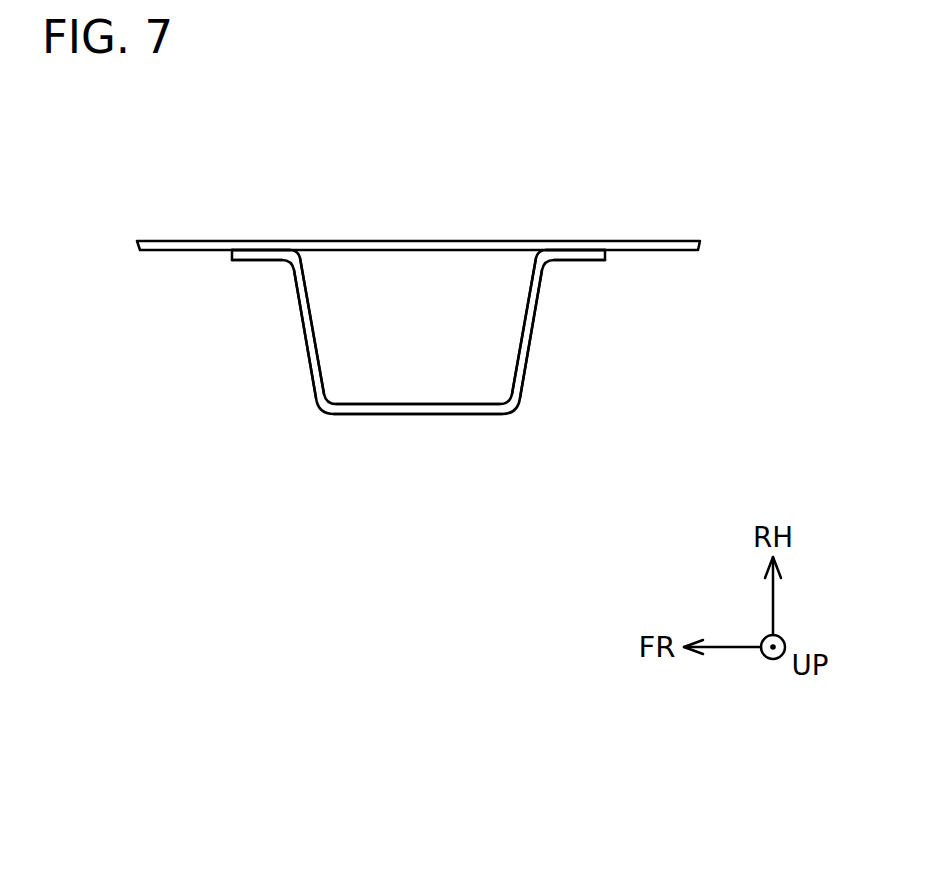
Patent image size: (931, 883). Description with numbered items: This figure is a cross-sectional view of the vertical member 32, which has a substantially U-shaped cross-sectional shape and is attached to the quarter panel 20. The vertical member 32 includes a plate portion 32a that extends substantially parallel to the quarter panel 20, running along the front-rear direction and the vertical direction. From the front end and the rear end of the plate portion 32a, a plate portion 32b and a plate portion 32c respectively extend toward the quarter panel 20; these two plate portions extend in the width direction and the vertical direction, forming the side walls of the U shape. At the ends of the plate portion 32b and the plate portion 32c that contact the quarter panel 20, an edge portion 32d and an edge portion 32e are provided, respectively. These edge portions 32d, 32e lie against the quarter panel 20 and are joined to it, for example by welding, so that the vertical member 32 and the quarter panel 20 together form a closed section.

The quarter panel 20 is at (456, 245).
The vertical member 32 is at (343, 428).
The plate portion 32a is at (438, 410).
The plate portion 32b is at (530, 357).
The plate portion 32c is at (305, 356).
The edge portion 32d is at (585, 255).
The edge portion 32e is at (253, 255).